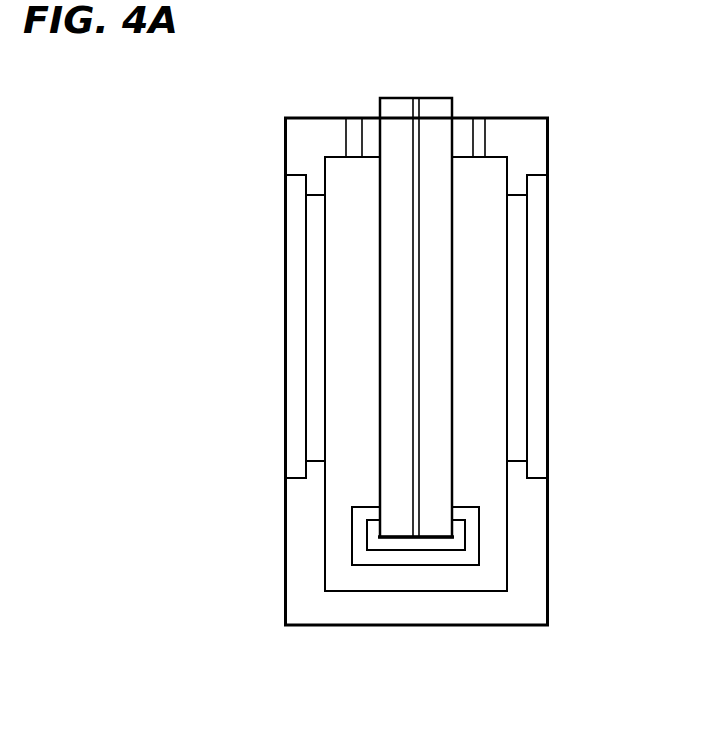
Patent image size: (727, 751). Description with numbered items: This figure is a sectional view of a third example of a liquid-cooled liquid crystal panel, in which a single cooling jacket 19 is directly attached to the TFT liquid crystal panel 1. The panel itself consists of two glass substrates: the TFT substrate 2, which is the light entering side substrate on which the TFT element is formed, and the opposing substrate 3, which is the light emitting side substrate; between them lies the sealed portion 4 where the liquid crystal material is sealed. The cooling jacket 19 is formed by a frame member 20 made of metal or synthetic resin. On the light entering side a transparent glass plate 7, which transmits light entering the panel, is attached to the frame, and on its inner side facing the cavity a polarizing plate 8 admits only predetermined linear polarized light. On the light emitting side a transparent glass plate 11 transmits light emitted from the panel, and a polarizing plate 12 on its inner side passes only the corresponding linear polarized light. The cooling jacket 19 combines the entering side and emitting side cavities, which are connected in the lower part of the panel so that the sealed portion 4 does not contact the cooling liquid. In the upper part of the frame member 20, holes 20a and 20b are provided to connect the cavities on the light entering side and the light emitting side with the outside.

The TFT liquid crystal panel 1 is at (375, 92).
The TFT substrate 2 is at (432, 235).
The opposing substrate 3 is at (393, 270).
The sealed portion 4 is at (418, 538).
The transparent glass plate 7 is at (548, 358).
The polarizing plate 8 is at (518, 427).
The transparent glass plate 11 is at (293, 358).
The polarizing plate 12 is at (315, 430).
The cooling jacket 19 is at (527, 106).
The frame member 20 is at (538, 167).
The hole 20a is at (478, 137).
The hole 20b is at (353, 141).